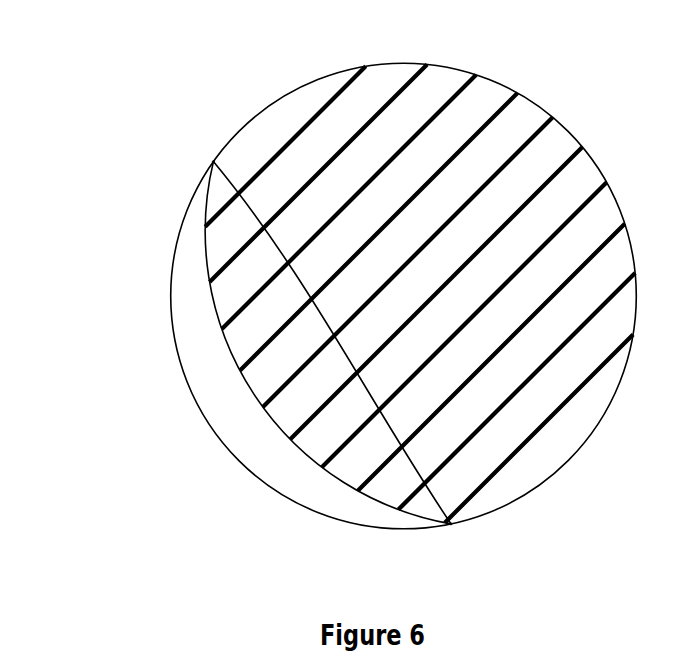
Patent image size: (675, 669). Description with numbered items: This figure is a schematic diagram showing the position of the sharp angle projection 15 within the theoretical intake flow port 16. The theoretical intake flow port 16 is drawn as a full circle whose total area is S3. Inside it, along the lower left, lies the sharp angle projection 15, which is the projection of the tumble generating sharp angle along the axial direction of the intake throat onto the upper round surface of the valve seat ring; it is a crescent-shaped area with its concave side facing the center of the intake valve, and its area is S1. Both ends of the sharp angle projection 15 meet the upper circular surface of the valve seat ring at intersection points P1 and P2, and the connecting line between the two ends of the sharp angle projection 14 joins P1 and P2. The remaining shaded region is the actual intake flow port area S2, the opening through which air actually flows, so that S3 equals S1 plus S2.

The connecting line between the two ends of the sharp angle projection 14 is at (390, 425).
The sharp angle projection 15 is at (192, 315).
The theoretical intake flow port 16 is at (535, 100).
The area of the sharp angle projection S1 is at (234, 418).
The actual intake flow port area S2 is at (420, 293).
The intersection point P1 is at (197, 142).
The intersection point P2 is at (473, 542).